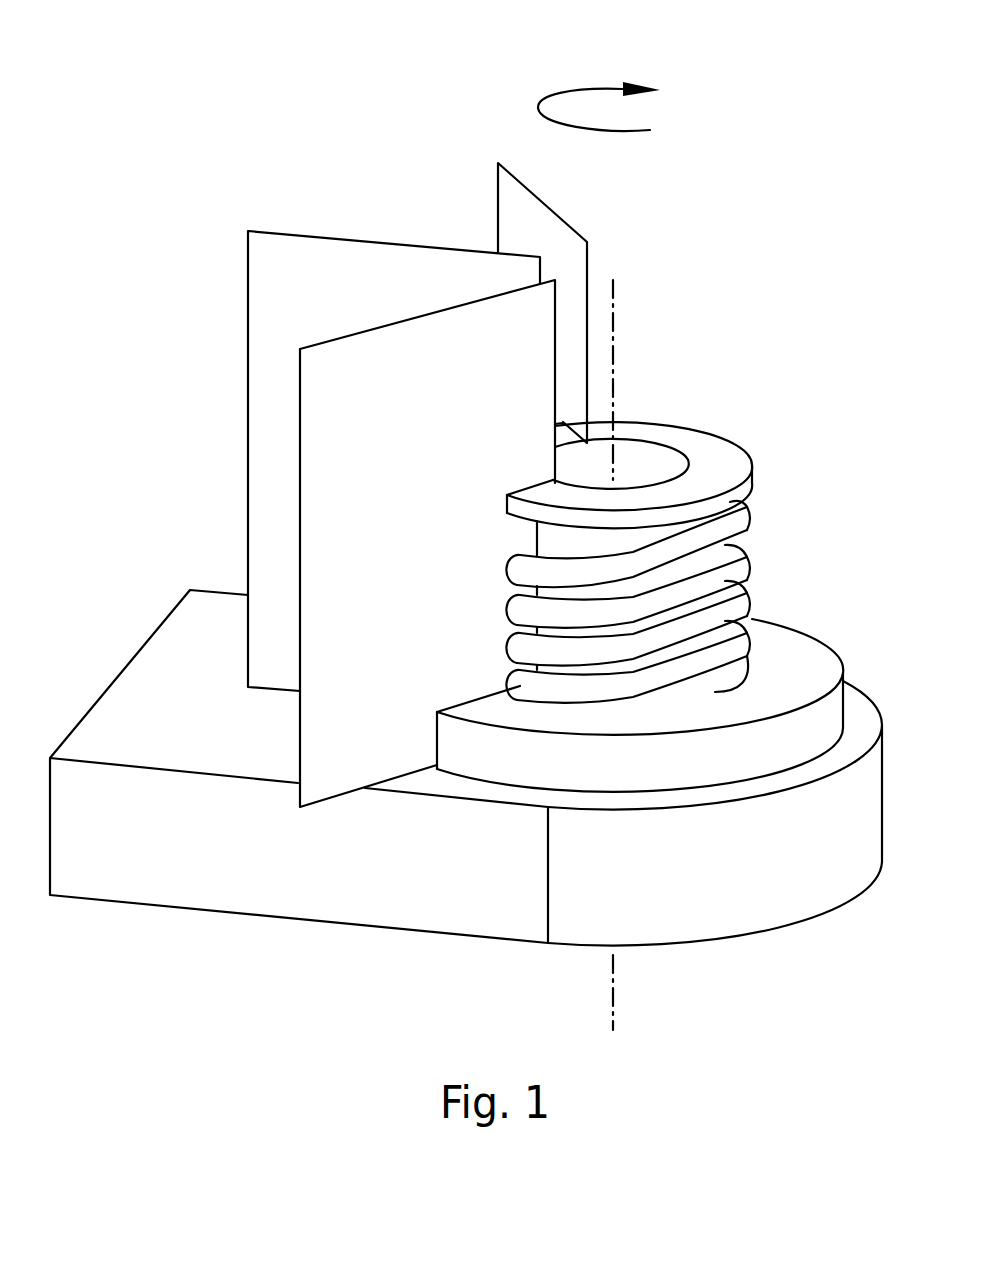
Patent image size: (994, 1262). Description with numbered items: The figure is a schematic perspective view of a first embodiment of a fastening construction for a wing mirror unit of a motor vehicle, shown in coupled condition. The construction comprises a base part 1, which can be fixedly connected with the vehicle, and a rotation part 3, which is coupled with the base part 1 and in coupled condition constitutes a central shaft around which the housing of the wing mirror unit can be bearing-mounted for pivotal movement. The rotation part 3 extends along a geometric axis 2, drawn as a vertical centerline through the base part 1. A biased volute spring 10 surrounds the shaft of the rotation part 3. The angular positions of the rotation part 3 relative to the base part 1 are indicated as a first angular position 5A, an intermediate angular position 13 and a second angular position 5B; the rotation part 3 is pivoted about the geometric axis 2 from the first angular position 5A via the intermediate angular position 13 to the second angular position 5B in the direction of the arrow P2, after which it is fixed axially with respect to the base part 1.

The base part 1 is at (336, 877).
The geometric axis 2 is at (615, 297).
The rotation part 3 is at (691, 562).
The first angular position 5A is at (295, 442).
The second angular position 5B is at (490, 208).
The volute spring 10 is at (747, 568).
The intermediate angular position 13 is at (245, 293).
The arrow P2 is at (570, 87).